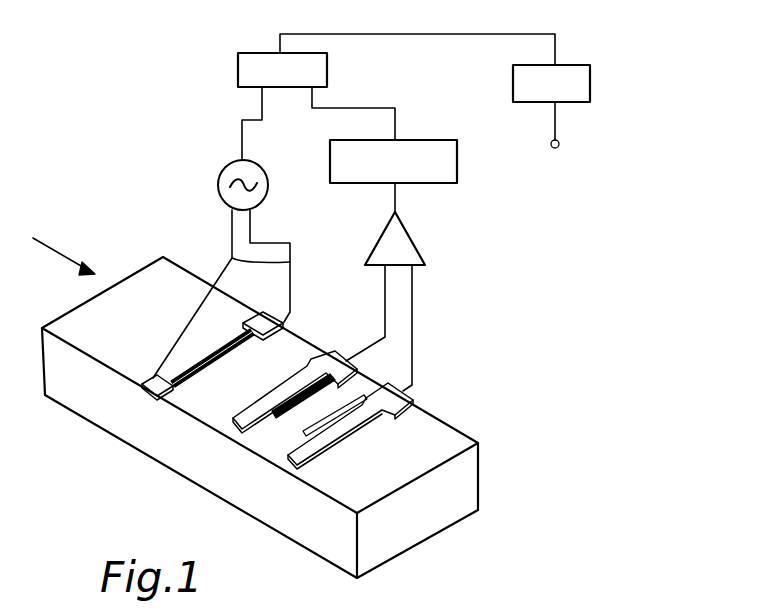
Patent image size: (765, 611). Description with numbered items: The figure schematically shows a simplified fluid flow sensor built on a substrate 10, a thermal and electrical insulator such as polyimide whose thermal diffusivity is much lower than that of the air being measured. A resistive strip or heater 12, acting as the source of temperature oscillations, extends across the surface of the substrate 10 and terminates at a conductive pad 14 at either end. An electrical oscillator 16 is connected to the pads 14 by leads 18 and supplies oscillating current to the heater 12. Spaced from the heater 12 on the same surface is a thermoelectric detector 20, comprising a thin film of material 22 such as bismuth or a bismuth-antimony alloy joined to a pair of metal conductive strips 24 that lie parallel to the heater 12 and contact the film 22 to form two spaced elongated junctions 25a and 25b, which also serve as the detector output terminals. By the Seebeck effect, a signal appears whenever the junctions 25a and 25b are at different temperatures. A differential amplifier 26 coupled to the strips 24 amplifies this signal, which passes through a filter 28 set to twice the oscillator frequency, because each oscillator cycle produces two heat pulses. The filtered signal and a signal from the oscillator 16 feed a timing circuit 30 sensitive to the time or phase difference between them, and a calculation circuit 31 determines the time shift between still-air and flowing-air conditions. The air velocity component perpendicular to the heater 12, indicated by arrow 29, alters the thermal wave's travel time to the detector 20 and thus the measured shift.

The substrate 10 is at (462, 430).
The resistive strip or heater 12 is at (203, 357).
The conductive pad 14 is at (282, 318).
The electrical oscillator 16 is at (218, 184).
The leads 18 is at (216, 268).
The thermoelectric detector 20 is at (413, 392).
The thin film of material 22 is at (292, 434).
The conductive strips 24 is at (272, 400).
The first junction 25a is at (297, 391).
The second junction 25b is at (320, 427).
The differential amplifier 26 is at (418, 241).
The filter 28 is at (457, 163).
The arrow 29 is at (61, 254).
The timing circuit 30 is at (238, 86).
The calculation circuit 31 is at (590, 83).